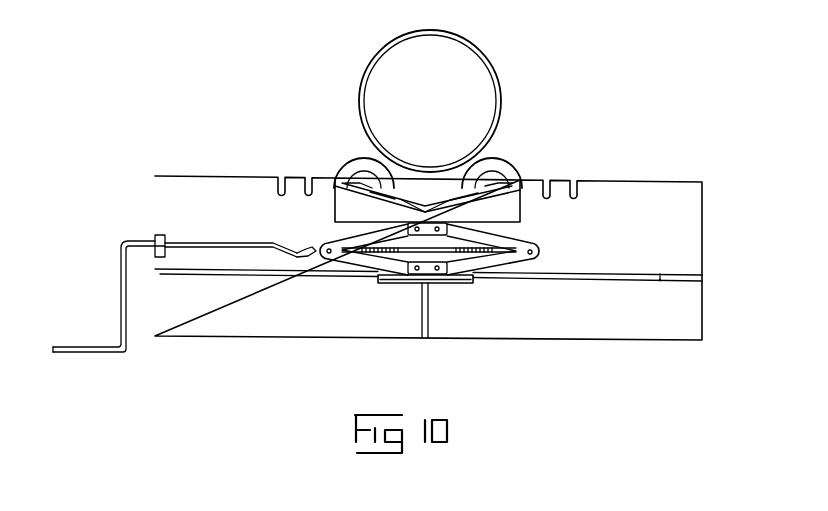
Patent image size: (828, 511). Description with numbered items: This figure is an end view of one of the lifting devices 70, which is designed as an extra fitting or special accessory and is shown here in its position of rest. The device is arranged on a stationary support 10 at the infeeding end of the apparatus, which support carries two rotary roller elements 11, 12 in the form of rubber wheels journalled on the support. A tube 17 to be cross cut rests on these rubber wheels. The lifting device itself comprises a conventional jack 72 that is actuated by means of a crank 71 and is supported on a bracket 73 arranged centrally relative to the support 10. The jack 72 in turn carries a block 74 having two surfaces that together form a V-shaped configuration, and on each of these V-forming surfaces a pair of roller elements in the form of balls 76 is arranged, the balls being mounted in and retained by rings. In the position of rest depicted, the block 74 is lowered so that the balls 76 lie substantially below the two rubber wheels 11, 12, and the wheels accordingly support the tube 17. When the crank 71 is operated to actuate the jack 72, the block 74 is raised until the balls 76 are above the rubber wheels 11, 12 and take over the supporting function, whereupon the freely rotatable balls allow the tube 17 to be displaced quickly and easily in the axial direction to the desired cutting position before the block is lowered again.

The support 10 is at (638, 188).
The roller element 11 is at (347, 158).
The roller element 12 is at (518, 162).
The tube 17 is at (478, 50).
The lifting device 70 is at (311, 219).
The crank 71 is at (213, 242).
The jack 72 is at (510, 262).
The bracket 73 is at (405, 285).
The block 74 is at (518, 210).
The ball 76 is at (413, 193).